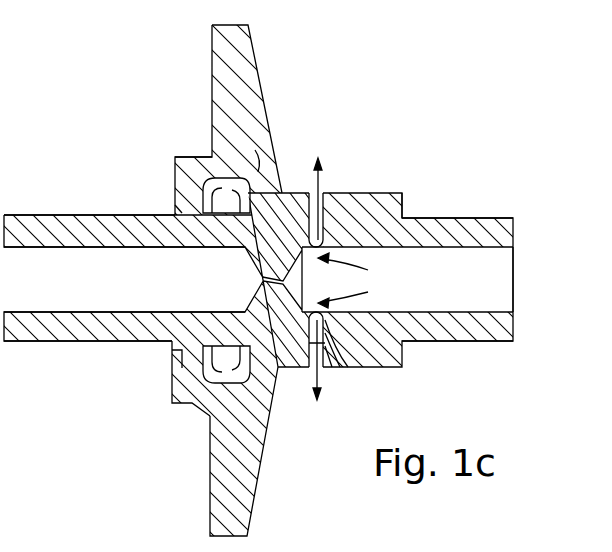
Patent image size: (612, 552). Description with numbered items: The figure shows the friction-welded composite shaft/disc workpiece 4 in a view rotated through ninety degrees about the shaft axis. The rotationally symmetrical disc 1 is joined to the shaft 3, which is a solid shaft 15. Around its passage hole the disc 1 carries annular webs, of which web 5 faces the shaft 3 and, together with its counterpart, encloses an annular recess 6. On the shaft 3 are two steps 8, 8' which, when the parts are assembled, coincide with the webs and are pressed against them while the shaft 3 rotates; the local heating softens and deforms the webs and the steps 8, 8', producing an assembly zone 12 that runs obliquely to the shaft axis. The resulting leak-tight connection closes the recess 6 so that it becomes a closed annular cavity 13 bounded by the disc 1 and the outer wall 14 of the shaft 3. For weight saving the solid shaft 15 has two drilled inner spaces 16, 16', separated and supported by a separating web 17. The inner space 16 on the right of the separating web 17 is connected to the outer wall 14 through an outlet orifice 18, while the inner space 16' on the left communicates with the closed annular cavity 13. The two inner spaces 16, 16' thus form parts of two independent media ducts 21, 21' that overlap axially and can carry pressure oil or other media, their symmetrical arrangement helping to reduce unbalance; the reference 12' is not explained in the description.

The disc 1 is at (227, 38).
The shaft 3 is at (511, 234).
The composite shaft/disc workpiece 4 is at (400, 125).
The annular web 5 is at (175, 157).
The annular recess 6 is at (232, 176).
The step 8 is at (97, 355).
The step 8' is at (297, 190).
The assembly zone 12 is at (150, 374).
The lower flow direction 12' is at (300, 378).
The closed annular cavity 13 is at (213, 187).
The outer wall 14 is at (233, 177).
The solid shaft 15 is at (473, 218).
The inner space 16 is at (494, 319).
The inner space 16' is at (124, 322).
The separating web 17 is at (307, 279).
The outlet orifice 18 is at (327, 213).
The media duct 21 is at (444, 288).
The media duct 21' is at (178, 213).